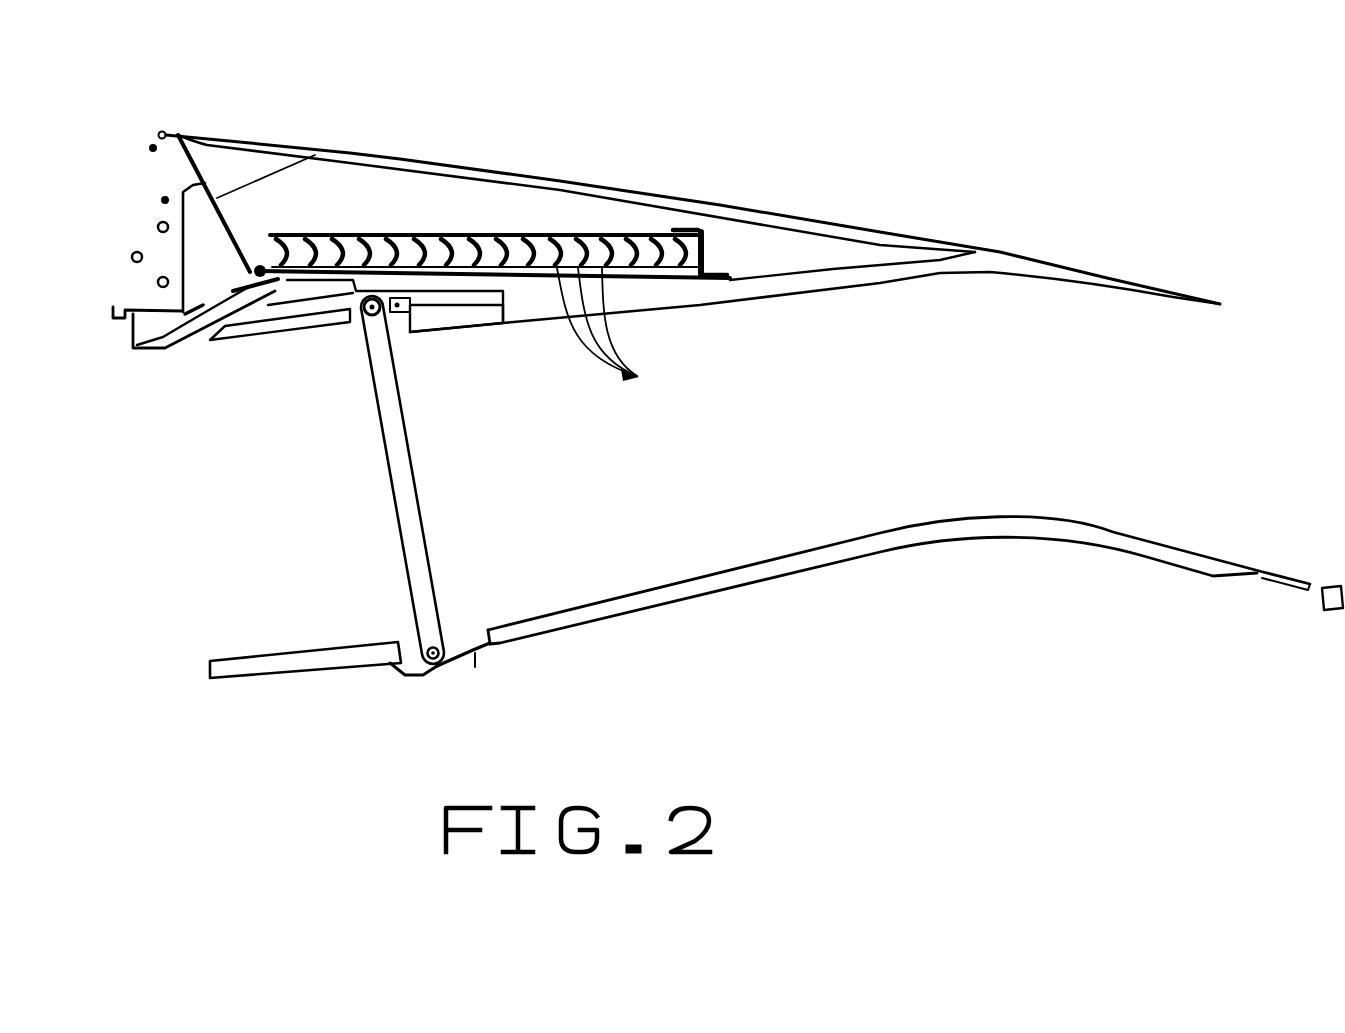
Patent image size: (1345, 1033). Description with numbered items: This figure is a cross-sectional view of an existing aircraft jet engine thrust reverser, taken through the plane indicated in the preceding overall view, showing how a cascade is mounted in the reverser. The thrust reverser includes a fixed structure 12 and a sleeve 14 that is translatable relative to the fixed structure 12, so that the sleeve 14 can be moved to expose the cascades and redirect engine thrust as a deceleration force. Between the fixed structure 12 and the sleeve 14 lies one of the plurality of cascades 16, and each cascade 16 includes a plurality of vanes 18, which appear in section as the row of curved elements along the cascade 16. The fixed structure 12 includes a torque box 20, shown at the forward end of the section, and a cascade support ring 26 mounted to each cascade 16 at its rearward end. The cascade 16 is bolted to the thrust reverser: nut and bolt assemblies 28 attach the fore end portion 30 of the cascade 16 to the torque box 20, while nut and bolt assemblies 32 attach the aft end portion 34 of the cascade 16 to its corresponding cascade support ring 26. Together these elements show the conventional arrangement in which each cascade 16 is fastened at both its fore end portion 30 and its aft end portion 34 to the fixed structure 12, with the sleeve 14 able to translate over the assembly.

The fixed structure 12 is at (803, 577).
The sleeve 14 is at (997, 252).
The cascade 16 is at (512, 235).
The vanes 18 is at (614, 329).
The torque box 20 is at (315, 155).
The cascade support ring 26 is at (704, 255).
The nut and bolt assemblies 28 is at (260, 267).
The fore end portion 30 is at (278, 234).
The nut and bolt assemblies 32 is at (705, 260).
The aft end portion 34 is at (676, 231).